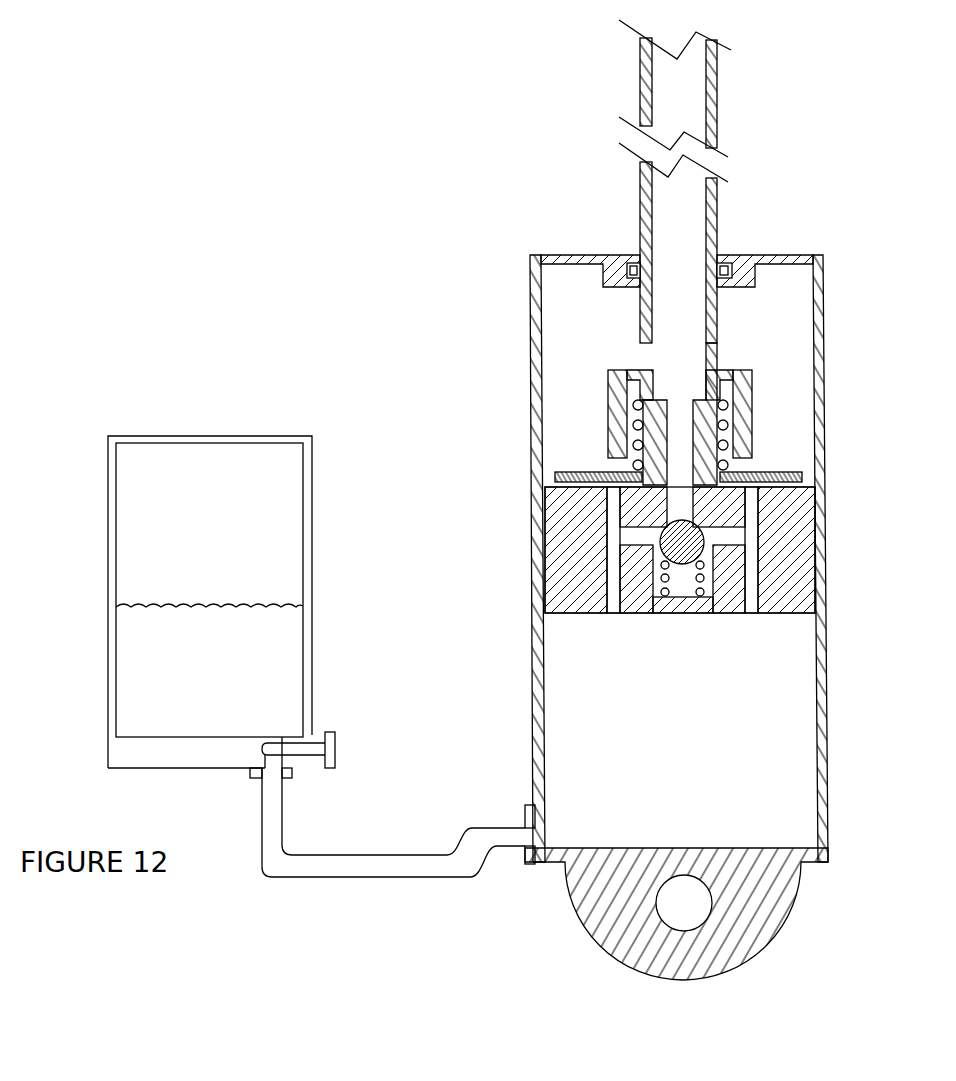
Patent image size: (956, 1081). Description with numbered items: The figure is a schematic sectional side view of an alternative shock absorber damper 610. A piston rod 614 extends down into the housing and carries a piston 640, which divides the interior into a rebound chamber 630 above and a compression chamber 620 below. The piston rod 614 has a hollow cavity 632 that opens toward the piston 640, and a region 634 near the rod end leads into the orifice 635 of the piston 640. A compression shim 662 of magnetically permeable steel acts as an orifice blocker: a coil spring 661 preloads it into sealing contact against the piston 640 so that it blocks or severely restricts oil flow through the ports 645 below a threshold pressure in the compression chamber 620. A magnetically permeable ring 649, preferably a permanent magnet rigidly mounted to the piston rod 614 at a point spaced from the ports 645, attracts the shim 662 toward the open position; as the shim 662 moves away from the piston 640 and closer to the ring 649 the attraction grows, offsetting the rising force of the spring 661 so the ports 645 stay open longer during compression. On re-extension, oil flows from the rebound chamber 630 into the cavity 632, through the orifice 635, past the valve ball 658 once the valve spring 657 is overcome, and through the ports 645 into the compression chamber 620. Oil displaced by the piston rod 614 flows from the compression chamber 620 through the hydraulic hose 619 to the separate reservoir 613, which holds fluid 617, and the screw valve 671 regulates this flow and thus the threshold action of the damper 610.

The shock absorber damper 610 is at (438, 196).
The reservoir 613 is at (280, 436).
The piston rod 614 is at (640, 172).
The fluid 617 is at (160, 543).
The hydraulic hose 619 is at (387, 867).
The compression chamber 620 is at (676, 849).
The rebound chamber 630 is at (677, 294).
The hollow cavity 632 is at (693, 365).
The rod end gap 634 is at (647, 357).
The orifice 635 is at (620, 478).
The piston 640 is at (573, 550).
The ports 645 is at (613, 605).
The magnetically permeable ring 649 is at (750, 420).
The valve spring 657 is at (700, 580).
The valve ball 658 is at (683, 545).
The coil spring 661 is at (723, 402).
The compression shim 662 is at (745, 470).
The screw valve 671 is at (333, 738).